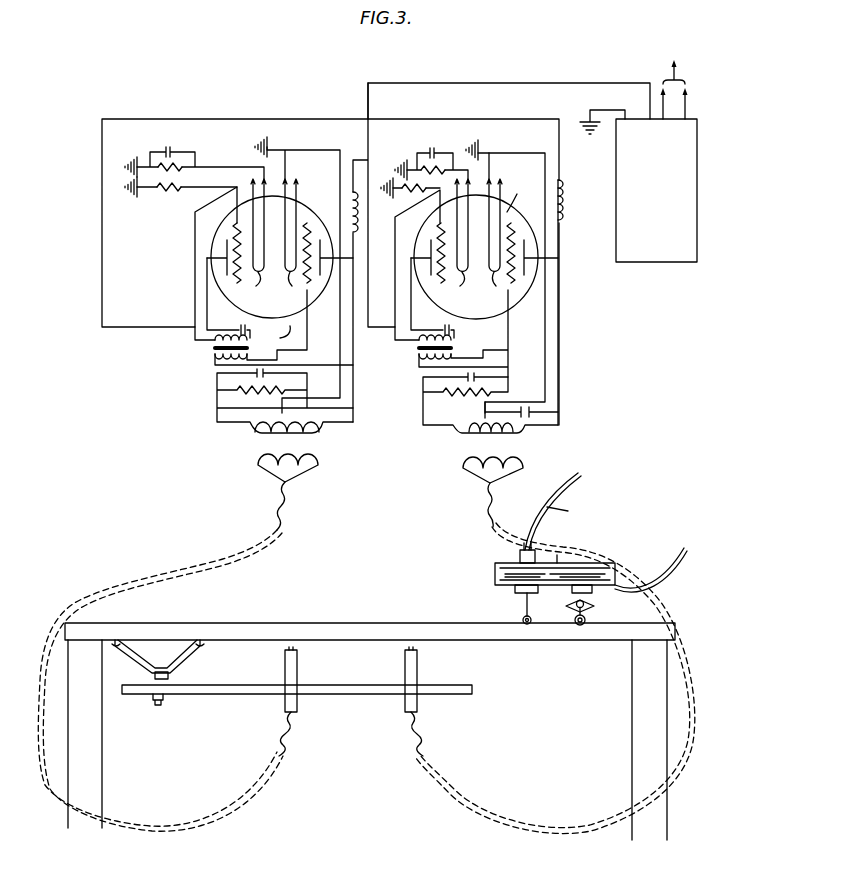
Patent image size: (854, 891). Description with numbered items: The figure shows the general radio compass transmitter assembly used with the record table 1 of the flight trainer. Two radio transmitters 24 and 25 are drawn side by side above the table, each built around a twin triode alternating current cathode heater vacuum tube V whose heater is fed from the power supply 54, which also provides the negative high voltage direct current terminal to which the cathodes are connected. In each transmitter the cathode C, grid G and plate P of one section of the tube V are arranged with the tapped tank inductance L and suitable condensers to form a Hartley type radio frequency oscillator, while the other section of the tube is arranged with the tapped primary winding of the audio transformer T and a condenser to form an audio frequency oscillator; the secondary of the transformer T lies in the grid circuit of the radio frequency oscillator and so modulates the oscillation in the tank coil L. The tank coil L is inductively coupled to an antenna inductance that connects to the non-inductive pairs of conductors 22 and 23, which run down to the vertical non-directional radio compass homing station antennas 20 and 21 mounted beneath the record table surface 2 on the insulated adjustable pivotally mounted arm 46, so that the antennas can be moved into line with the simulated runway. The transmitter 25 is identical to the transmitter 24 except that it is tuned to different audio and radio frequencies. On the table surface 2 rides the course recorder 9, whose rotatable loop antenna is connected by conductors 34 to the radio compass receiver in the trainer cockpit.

The radio transmitter 24 is at (298, 116).
The radio transmitter 25 is at (573, 294).
The power supply 54 is at (690, 222).
The non-inductive pair of conductors 22 is at (292, 478).
The non-inductive pair of conductors 23 is at (496, 480).
The conductors 34 is at (578, 478).
The course recorder 9 is at (496, 582).
The record table surface 2 is at (390, 630).
The radio compass homing station antenna 20 is at (298, 663).
The radio compass homing station antenna 21 is at (418, 665).
The insulated adjustable pivotally mounted arm 46 is at (364, 695).
The record table 1 is at (658, 815).
The tapped tank inductance L is at (325, 436).
The plate P is at (322, 240).
The grid G is at (308, 292).
The cathode C is at (387, 239).
The vacuum tube V is at (394, 263).
The audio transformer T is at (213, 350).